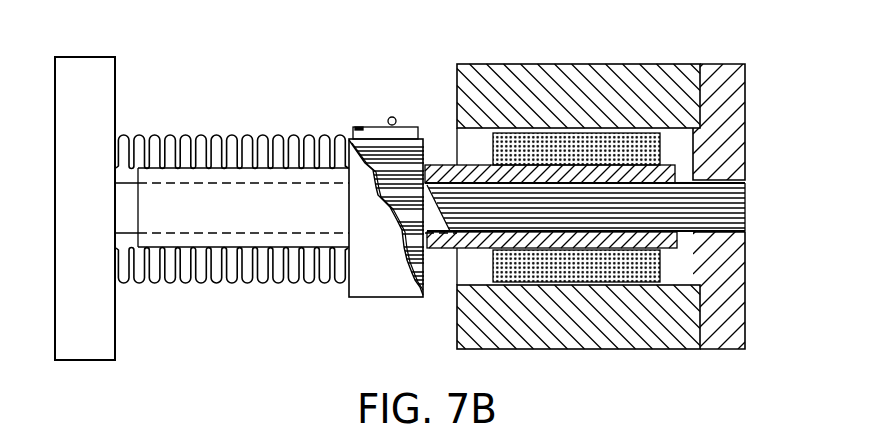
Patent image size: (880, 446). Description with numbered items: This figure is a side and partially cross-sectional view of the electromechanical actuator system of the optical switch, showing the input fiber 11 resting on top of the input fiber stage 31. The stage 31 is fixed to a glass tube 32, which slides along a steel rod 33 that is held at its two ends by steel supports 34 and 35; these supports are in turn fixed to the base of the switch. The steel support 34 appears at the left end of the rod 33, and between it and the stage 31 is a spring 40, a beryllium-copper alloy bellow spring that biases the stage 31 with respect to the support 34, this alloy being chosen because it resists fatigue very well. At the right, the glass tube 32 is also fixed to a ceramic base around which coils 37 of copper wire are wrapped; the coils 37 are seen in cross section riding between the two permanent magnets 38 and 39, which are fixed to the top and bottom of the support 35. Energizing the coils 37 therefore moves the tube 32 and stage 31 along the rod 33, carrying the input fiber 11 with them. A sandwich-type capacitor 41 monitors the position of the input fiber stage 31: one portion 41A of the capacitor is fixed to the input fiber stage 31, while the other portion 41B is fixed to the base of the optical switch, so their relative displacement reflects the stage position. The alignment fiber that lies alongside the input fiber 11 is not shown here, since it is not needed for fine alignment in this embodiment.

The input fiber 11 is at (392, 117).
The input fiber stage 31 is at (360, 127).
The glass tube 32 is at (440, 165).
The steel rod 33 is at (727, 204).
The steel support 34 is at (98, 88).
The steel support 35 is at (729, 102).
The coils 37 is at (660, 147).
The permanent magnet 38 is at (592, 83).
The permanent magnet 39 is at (612, 332).
The spring 40 is at (214, 135).
The sandwich-type capacitor 41 is at (377, 281).
The capacitor portion 41A is at (380, 147).
The capacitor portion 41B is at (362, 165).